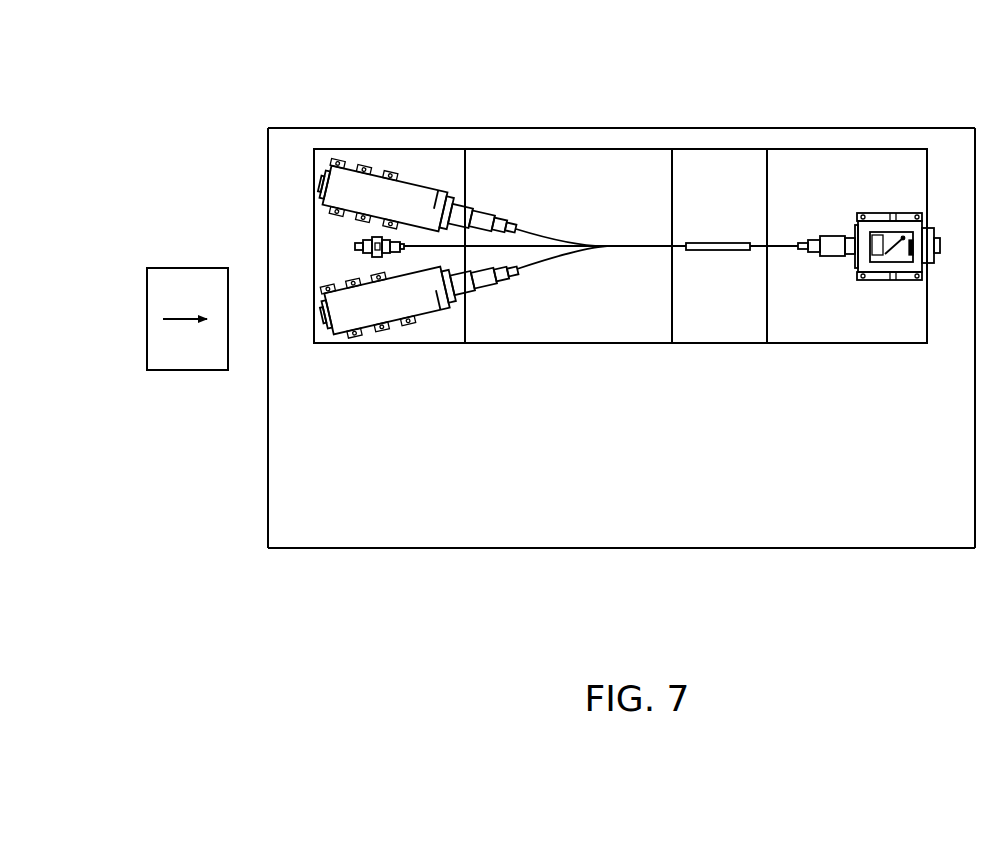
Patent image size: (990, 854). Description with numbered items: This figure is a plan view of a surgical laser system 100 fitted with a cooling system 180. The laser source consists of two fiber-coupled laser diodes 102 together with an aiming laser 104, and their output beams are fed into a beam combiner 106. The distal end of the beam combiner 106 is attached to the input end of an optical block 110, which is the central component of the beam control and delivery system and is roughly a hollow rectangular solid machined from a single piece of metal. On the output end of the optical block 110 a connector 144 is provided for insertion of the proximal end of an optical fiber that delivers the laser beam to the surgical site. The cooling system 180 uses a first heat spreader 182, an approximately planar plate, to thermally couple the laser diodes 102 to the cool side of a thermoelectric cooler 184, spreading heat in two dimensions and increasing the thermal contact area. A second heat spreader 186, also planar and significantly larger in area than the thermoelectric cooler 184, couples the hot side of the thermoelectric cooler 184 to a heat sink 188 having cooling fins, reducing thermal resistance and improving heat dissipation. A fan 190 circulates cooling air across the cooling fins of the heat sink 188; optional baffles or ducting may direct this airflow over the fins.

The surgical laser system 100 is at (391, 90).
The laser diodes 102 is at (433, 218).
The aiming laser 104 is at (355, 247).
The beam combiner 106 is at (723, 242).
The optical block 110 is at (892, 216).
The connector 144 is at (943, 240).
The cooling system 180 is at (376, 358).
The first heat spreader 182 is at (377, 157).
The thermoelectric cooler 184 is at (421, 146).
The second heat spreader 186 is at (820, 127).
The heat sink 188 is at (731, 556).
The fan 190 is at (195, 358).